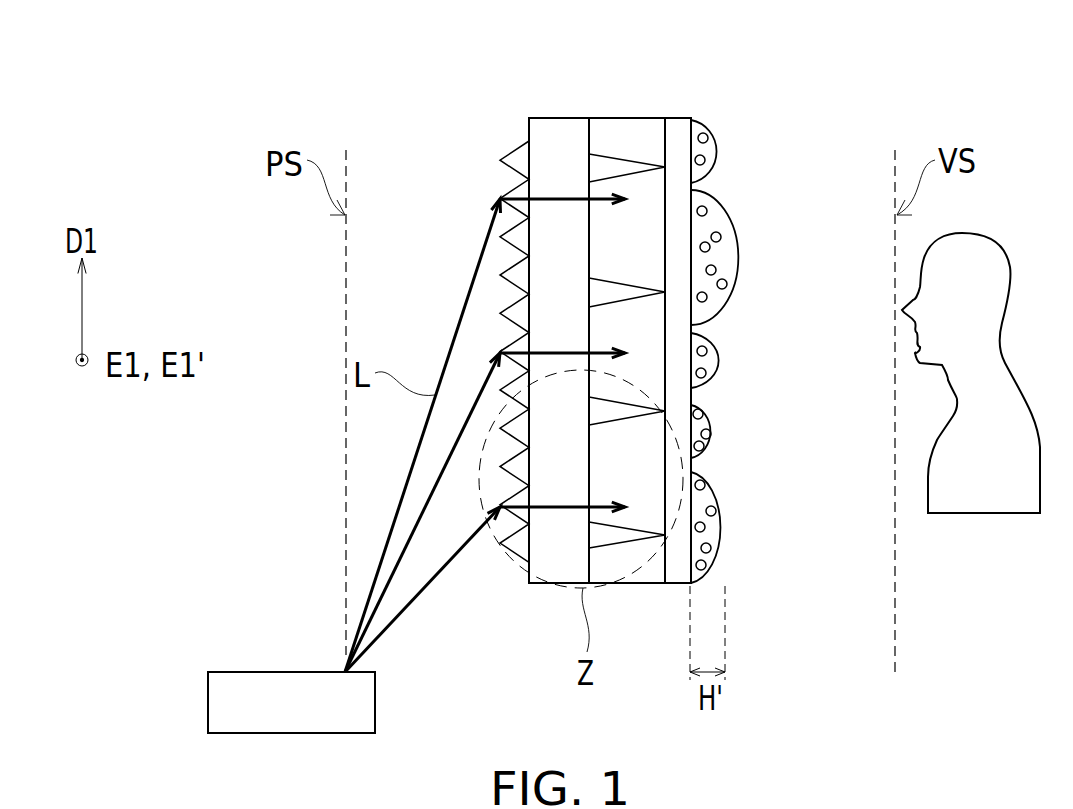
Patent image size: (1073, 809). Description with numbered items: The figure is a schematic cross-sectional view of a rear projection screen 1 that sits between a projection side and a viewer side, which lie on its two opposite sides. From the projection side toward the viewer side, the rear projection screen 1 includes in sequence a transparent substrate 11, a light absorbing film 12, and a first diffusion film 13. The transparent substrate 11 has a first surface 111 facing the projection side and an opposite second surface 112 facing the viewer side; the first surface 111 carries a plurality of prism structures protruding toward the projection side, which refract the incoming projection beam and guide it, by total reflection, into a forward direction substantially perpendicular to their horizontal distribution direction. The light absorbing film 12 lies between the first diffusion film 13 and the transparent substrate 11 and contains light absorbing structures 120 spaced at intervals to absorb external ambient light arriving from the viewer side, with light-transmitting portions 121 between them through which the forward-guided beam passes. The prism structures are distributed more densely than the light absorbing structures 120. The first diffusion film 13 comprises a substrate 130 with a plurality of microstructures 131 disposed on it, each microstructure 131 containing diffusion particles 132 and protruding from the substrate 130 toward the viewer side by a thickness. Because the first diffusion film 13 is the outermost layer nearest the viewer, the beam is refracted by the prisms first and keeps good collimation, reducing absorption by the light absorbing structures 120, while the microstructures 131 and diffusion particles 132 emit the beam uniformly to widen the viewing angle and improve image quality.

The rear projection screen 1 is at (773, 143).
The transparent substrate 11 is at (602, 56).
The first surface 111 is at (543, 155).
The second surface 112 is at (589, 150).
The light absorbing film 12 is at (742, 56).
The light absorbing structures 120 is at (615, 168).
The light-transmitting portions 121 is at (650, 150).
The first diffusion film 13 is at (835, 540).
The substrate 130 is at (677, 572).
The microstructures 131 is at (700, 565).
The diffusion particles 132 is at (707, 527).